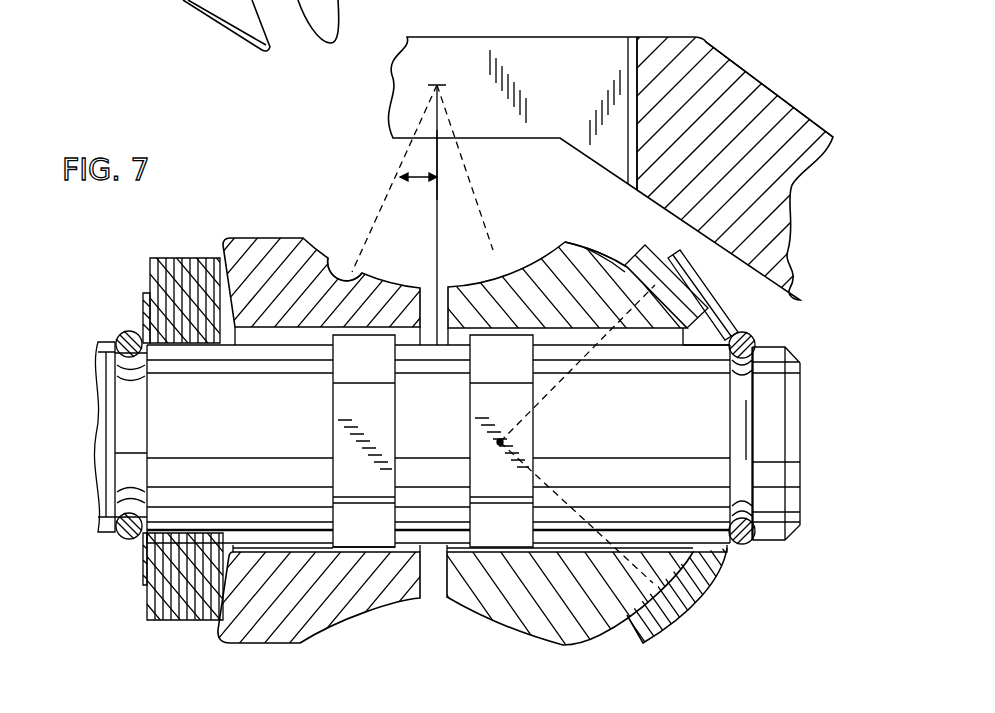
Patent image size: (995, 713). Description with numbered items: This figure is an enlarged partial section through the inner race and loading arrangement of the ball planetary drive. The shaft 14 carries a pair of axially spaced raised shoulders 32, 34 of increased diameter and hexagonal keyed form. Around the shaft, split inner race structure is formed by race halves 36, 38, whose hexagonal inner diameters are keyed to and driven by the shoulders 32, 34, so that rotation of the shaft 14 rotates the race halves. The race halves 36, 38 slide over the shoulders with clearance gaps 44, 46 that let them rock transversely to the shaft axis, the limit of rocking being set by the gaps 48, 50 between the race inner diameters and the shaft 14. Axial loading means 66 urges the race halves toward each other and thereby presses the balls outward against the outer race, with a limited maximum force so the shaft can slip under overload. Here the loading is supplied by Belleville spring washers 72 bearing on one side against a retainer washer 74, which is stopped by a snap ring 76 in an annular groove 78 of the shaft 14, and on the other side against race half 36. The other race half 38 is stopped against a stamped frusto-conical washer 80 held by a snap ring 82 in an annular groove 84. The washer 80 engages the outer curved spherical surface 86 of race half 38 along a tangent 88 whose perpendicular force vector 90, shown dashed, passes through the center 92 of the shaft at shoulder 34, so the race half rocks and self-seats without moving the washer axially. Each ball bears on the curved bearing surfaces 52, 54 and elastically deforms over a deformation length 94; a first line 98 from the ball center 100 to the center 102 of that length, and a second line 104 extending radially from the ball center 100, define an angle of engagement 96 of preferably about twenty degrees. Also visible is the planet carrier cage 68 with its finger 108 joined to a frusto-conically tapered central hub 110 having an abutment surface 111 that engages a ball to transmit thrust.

The shaft 14 is at (158, 448).
The raised shoulder 32 is at (345, 458).
The raised shoulder 34 is at (535, 492).
The race half 36 is at (245, 642).
The race half 38 is at (548, 628).
The clearance gap 44 is at (375, 548).
The clearance gap 46 is at (513, 550).
The gap 48 is at (310, 545).
The gap 50 is at (672, 548).
The curved bearing surface 52 is at (322, 250).
The curved bearing surface 54 is at (545, 240).
The axial loading means 66 is at (281, 411).
The planet carrier cage 68 is at (715, 53).
The Belleville spring washer 72 is at (192, 262).
The retainer washer 74 is at (145, 295).
The snap ring 76 is at (120, 335).
The annular groove 78 is at (122, 404).
The frusto-conical washer 80 is at (698, 308).
The snap ring 82 is at (750, 334).
The annular groove 84 is at (748, 422).
The outer curved spherical surface 86 is at (585, 246).
The tangent 88 is at (650, 290).
The perpendicular force vector 90 is at (578, 378).
The center 92 is at (503, 442).
The elastic deformation length 94 is at (385, 255).
The angle of engagement 96 is at (437, 150).
The first line 98 is at (400, 177).
The center of the ball 100 is at (437, 85).
The center of elastic deformation length 102 is at (364, 272).
The second line 104 is at (438, 212).
The finger 108 is at (410, 72).
The central hub 110 is at (752, 82).
The abutment surface 111 is at (632, 68).